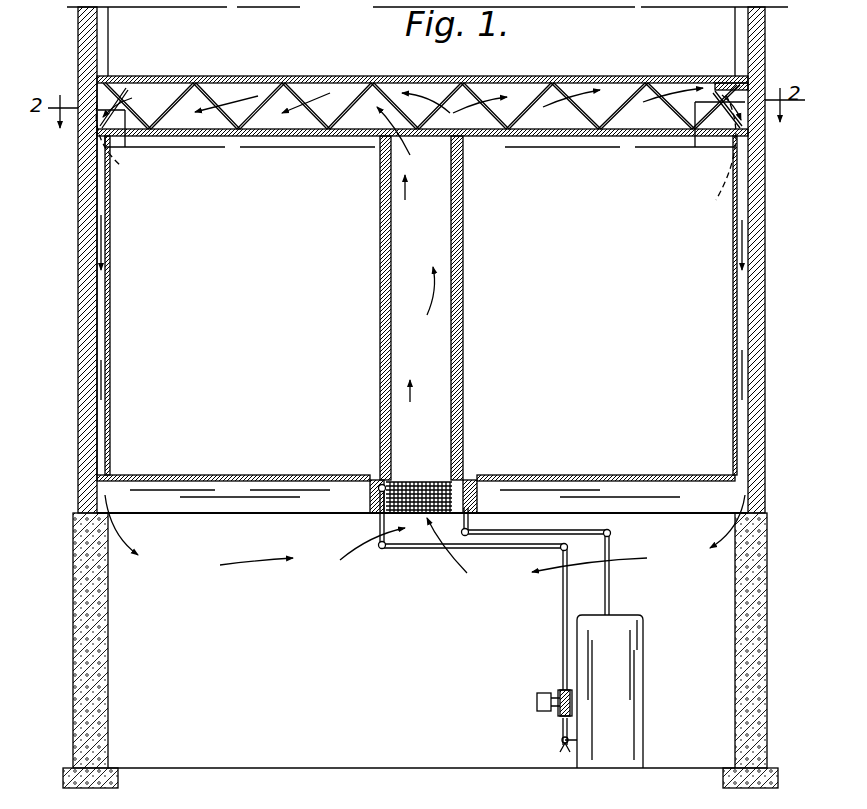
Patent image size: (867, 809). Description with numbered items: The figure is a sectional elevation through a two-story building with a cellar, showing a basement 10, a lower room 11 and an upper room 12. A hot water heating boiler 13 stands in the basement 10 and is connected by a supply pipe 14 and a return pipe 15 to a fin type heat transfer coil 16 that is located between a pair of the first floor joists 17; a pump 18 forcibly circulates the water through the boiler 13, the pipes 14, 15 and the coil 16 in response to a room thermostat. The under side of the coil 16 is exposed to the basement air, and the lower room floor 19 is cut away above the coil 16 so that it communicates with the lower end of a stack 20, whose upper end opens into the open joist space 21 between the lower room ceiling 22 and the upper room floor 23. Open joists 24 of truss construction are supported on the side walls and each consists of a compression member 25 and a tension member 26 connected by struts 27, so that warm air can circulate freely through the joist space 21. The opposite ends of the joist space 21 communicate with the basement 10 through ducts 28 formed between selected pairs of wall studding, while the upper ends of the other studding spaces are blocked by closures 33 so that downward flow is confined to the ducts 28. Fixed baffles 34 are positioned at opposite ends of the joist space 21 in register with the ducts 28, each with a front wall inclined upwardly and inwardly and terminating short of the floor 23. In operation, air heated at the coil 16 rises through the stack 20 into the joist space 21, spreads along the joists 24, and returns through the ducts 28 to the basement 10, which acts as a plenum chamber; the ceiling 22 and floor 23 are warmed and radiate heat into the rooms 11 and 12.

The basement 10 is at (230, 655).
The lower room 11 is at (240, 369).
The upper room 12 is at (262, 42).
The hot water heating boiler 13 is at (632, 672).
The supply pipe 14 is at (610, 585).
The return pipe 15 is at (565, 597).
The heat transfer coil 16 is at (440, 472).
The first floor joists 17 is at (308, 500).
The pump 18 is at (540, 705).
The lower room floor 19 is at (560, 475).
The stack 20 is at (438, 346).
The joist space 21 is at (520, 100).
The lower room ceiling 22 is at (580, 138).
The upper room floor 23 is at (598, 78).
The open joists 24 is at (434, 88).
The compression member 25 is at (336, 90).
The tension member 26 is at (275, 138).
The struts 27 is at (260, 96).
The ducts 28 is at (104, 300).
The closures 33 is at (115, 158).
The fixed baffles 34 is at (120, 100).